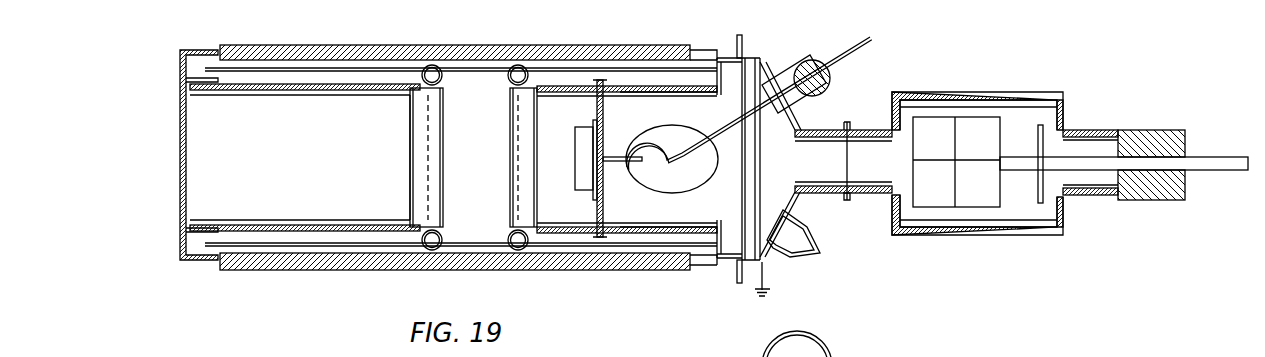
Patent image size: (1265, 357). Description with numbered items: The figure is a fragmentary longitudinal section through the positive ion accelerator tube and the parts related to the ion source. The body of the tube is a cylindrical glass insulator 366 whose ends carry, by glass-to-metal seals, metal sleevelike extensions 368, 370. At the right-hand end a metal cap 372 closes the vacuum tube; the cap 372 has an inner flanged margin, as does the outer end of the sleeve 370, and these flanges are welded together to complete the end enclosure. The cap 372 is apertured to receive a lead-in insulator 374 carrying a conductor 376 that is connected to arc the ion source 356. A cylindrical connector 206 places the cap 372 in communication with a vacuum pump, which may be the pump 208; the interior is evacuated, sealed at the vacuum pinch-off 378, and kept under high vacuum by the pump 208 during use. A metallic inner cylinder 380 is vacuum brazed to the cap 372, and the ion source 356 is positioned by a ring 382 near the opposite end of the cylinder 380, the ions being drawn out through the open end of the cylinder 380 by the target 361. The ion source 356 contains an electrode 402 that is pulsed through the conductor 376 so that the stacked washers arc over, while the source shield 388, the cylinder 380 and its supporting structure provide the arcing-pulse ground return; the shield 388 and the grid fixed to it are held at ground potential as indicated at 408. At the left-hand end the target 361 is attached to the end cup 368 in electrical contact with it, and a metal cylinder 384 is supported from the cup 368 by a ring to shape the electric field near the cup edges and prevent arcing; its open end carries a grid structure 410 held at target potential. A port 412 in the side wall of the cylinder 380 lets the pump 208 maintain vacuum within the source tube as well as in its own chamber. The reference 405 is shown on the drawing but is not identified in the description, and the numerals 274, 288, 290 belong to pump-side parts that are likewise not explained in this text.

The cylindrical glass insulator 366 is at (368, 44).
The metal sleevelike extension 368 is at (190, 50).
The metal cylinder 384 is at (293, 83).
The target 361 is at (190, 163).
The grid structure 410 is at (430, 183).
The second piston 405 is at (518, 130).
The source shield 388 is at (545, 86).
The metallic inner cylinder 380 is at (657, 87).
The ion source 356 is at (583, 170).
The ring 382 is at (603, 112).
The electrode 402 is at (625, 168).
The port 412 is at (676, 186).
The conductor 376 is at (872, 42).
The lead-in insulator 374 is at (816, 60).
The metal cap 372 is at (768, 62).
The metal sleevelike extension 370 is at (724, 53).
The ground potential 408 is at (758, 292).
The vacuum pinch-off 378 is at (812, 252).
The cylindrical connector 206 is at (866, 192).
The pump 208 is at (990, 236).
The filter block 274 is at (968, 122).
The shaft 288 is at (1213, 171).
The bushing 290 is at (1146, 131).